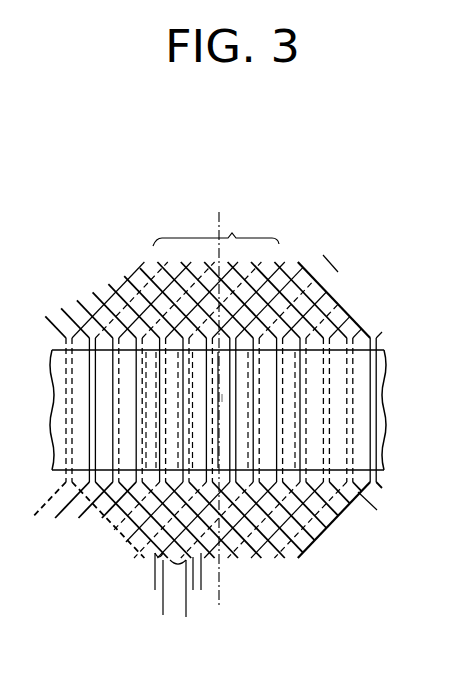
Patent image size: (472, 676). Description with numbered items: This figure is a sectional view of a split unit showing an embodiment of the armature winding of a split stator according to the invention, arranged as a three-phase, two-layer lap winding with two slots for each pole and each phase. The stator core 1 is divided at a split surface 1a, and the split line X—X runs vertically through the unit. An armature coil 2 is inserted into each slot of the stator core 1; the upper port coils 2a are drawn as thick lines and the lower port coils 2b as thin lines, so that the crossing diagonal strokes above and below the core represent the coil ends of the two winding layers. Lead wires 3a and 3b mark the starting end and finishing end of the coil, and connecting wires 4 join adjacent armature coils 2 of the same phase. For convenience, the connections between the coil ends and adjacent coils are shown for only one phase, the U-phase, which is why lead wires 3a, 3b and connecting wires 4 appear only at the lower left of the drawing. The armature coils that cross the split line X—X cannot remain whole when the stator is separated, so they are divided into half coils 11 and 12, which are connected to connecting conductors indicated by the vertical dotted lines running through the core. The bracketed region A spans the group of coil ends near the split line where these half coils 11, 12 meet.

The stator core 1 is at (386, 349).
The split surface 1a is at (222, 398).
The armature coil 2 is at (221, 377).
The upper port coils 2a is at (348, 316).
The lower port coils 2b is at (297, 258).
The lead wire of starting end 3a is at (193, 592).
The lead wire of finishing end 3b is at (153, 578).
The connecting wires 4 is at (153, 556).
The half coil 11 is at (190, 262).
The half coil 12 is at (148, 276).
The split line X is at (221, 410).
The region A is at (216, 227).